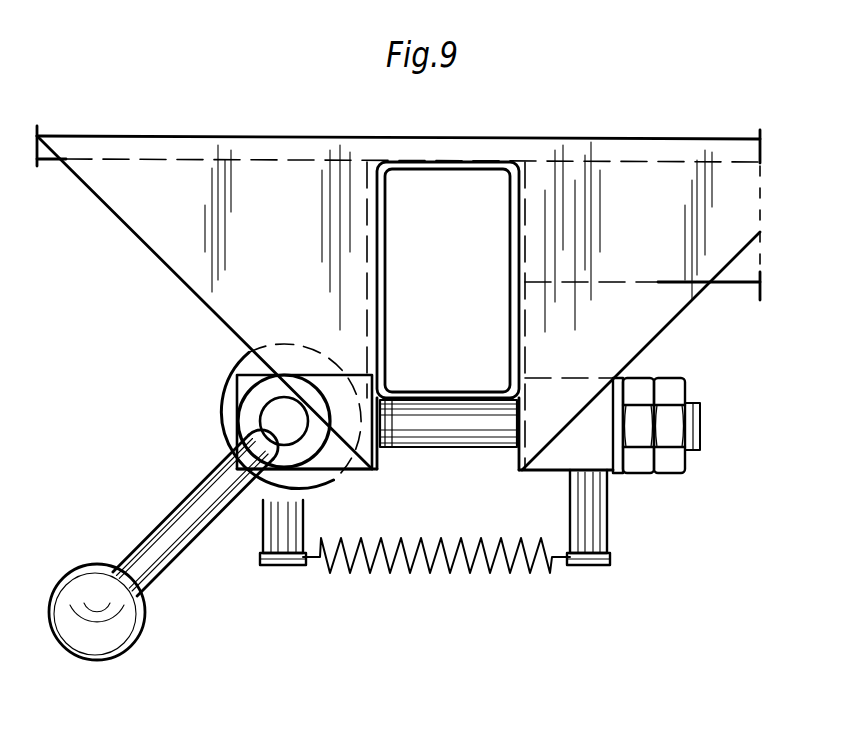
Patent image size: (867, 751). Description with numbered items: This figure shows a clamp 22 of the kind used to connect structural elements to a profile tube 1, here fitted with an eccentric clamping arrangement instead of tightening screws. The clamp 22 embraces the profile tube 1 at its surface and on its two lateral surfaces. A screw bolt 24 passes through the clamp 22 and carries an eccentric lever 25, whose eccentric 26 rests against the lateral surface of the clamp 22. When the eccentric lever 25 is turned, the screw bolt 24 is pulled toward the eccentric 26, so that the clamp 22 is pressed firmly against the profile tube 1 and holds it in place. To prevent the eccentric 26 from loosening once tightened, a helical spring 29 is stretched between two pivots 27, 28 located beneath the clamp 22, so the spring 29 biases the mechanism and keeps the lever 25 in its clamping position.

The profile tube 1 is at (382, 292).
The clamp 22 is at (662, 307).
The screw bolt 24 is at (457, 437).
The eccentric lever 25 is at (170, 523).
The eccentric 26 is at (220, 388).
The pivot 27 is at (270, 537).
The pivot 28 is at (600, 525).
The helical spring 29 is at (507, 565).